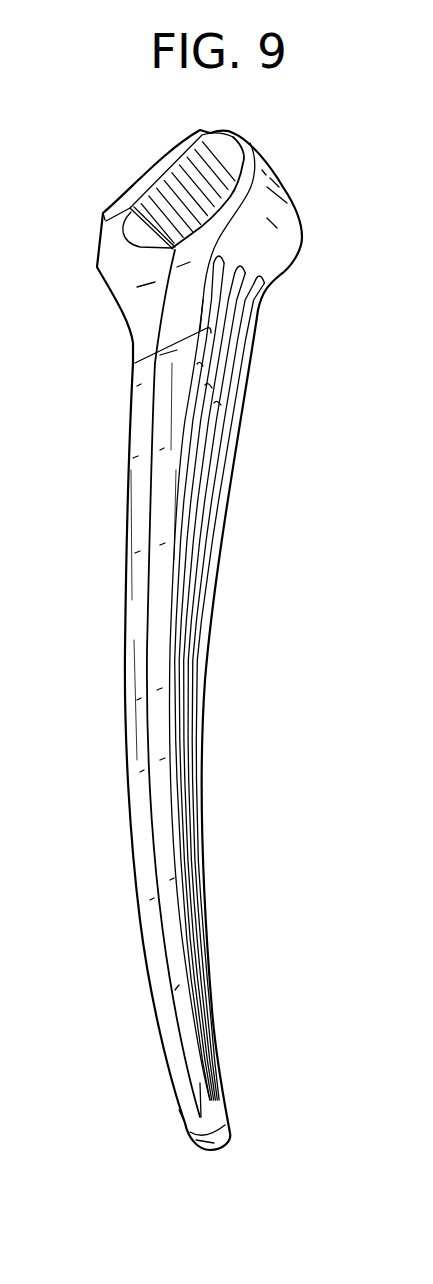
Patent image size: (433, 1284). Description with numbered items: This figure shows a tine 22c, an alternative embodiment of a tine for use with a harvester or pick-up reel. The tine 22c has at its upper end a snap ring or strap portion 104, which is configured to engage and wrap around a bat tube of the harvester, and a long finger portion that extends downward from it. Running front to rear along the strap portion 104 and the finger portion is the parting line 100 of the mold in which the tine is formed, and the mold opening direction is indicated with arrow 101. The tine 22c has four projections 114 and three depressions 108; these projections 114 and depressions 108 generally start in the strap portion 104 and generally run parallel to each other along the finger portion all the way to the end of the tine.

The tine 22c is at (280, 353).
The parting line 100 is at (150, 425).
The arrow 101 is at (157, 232).
The strap portion 104 is at (290, 227).
The depressions 108 is at (199, 433).
The projections 114 is at (198, 383).